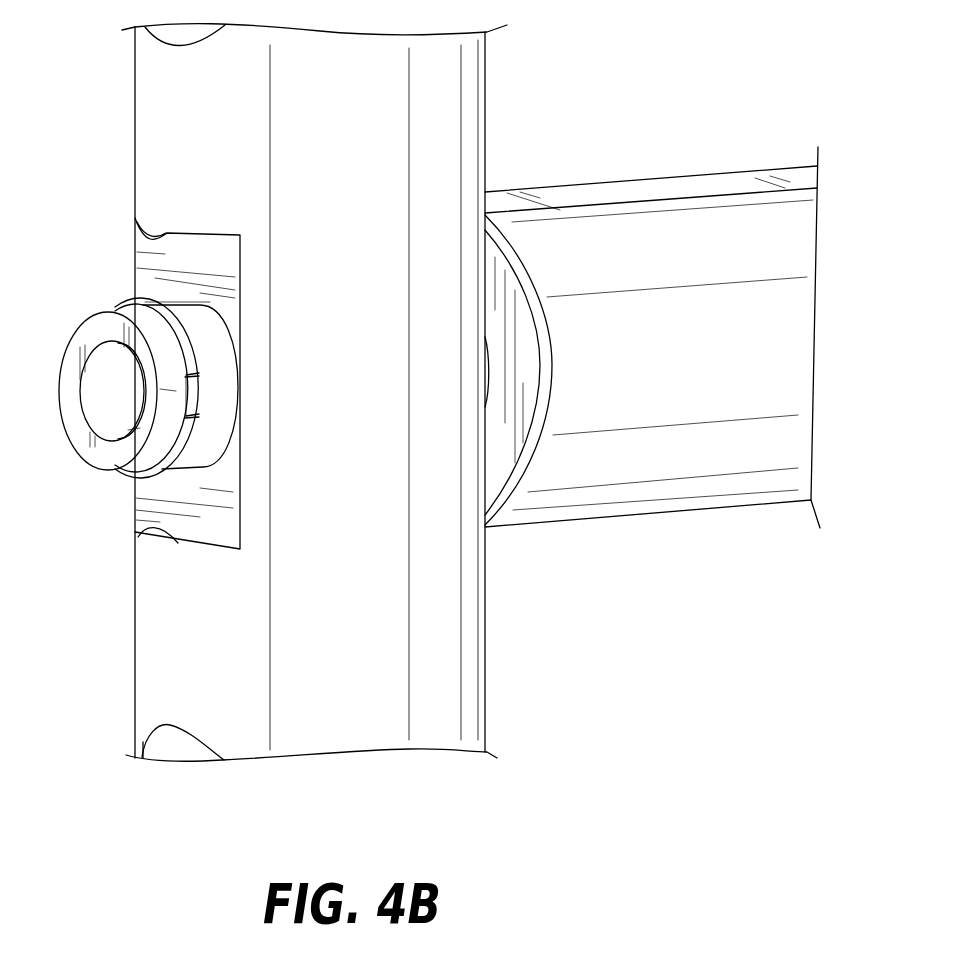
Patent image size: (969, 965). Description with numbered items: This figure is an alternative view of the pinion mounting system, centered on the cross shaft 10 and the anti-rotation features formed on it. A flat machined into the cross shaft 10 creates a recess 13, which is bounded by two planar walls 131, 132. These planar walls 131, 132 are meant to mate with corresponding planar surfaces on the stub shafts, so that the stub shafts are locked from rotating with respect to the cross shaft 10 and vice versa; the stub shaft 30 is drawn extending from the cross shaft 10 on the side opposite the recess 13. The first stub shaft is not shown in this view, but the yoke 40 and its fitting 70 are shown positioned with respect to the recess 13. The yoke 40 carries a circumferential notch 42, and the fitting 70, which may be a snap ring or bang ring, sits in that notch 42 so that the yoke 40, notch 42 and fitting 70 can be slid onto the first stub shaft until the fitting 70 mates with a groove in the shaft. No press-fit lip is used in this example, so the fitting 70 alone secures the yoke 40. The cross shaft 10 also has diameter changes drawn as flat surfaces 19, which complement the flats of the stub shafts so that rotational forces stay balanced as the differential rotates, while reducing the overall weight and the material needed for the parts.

The cross shaft 10 is at (352, 90).
The flat surfaces 19 is at (178, 30).
The recess 13 is at (140, 277).
The planar wall 131 is at (148, 240).
The planar wall 132 is at (142, 539).
The yoke 40 is at (70, 362).
The fitting 70 is at (183, 352).
The circumferential notch 42 is at (200, 406).
The second stub shaft 30 is at (616, 258).